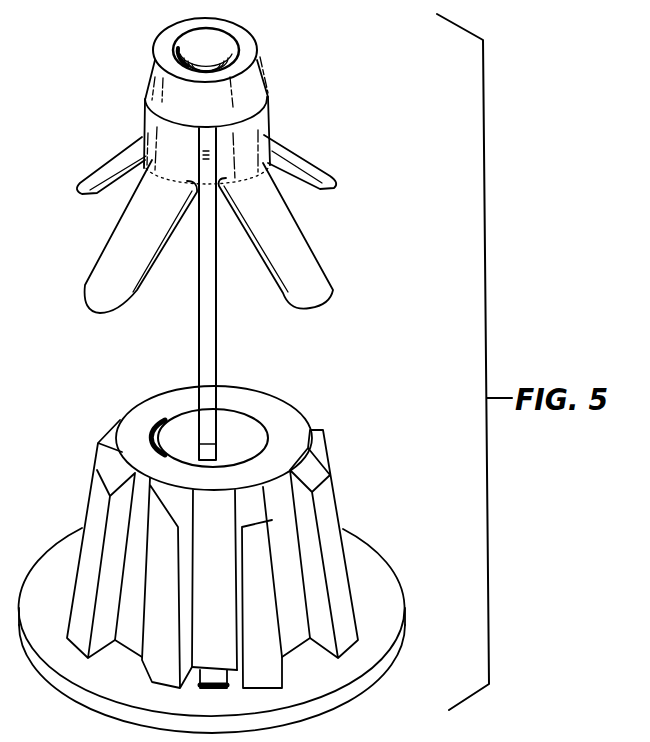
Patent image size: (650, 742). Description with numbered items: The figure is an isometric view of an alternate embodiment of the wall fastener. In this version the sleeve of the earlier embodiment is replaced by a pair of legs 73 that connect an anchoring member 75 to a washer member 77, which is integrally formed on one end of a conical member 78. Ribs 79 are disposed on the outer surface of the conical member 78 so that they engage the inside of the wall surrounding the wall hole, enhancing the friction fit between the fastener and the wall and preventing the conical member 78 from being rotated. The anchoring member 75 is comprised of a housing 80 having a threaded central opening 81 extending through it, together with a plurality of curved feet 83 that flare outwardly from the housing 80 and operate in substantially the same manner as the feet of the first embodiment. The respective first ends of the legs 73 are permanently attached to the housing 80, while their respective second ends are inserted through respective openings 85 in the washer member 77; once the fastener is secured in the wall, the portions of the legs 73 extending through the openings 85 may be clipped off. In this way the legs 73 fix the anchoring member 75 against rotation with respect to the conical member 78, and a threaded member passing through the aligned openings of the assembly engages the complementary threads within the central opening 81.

The legs 73 is at (218, 345).
The anchoring member 75 is at (288, 97).
The washer member 77 is at (378, 590).
The conical member 78 is at (78, 468).
The ribs 79 is at (97, 512).
The housing 80 is at (256, 78).
The threaded central opening 81 is at (224, 46).
The curved feet 83 is at (100, 285).
The openings 85 is at (216, 672).